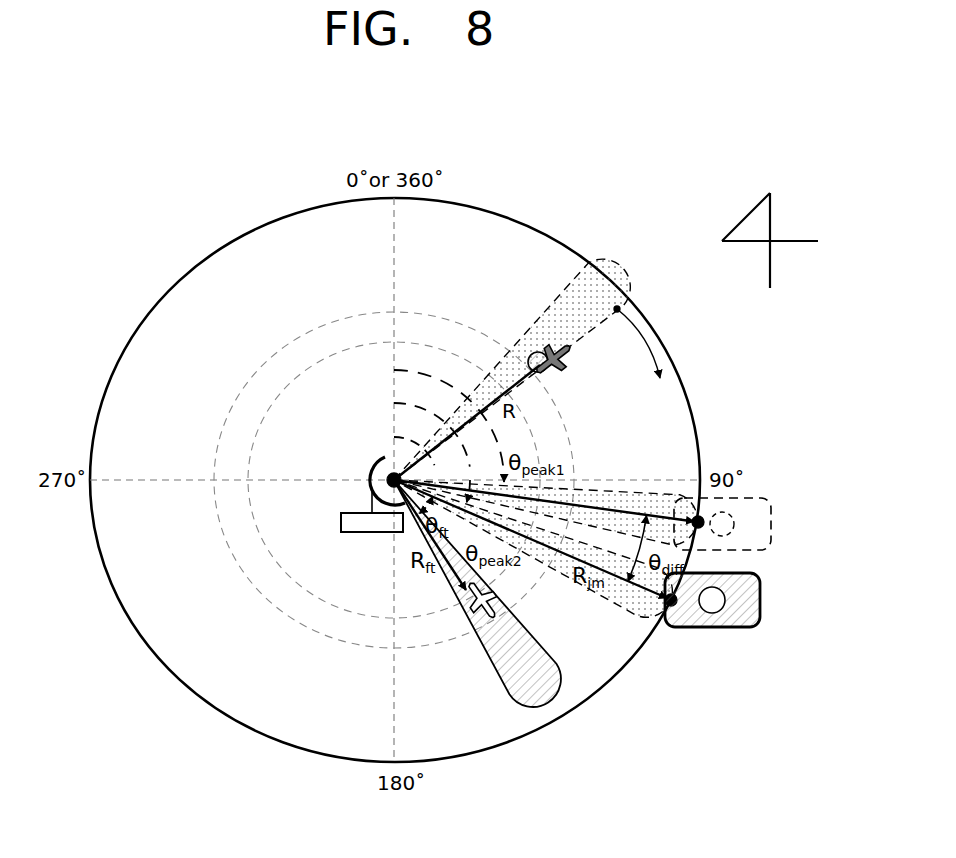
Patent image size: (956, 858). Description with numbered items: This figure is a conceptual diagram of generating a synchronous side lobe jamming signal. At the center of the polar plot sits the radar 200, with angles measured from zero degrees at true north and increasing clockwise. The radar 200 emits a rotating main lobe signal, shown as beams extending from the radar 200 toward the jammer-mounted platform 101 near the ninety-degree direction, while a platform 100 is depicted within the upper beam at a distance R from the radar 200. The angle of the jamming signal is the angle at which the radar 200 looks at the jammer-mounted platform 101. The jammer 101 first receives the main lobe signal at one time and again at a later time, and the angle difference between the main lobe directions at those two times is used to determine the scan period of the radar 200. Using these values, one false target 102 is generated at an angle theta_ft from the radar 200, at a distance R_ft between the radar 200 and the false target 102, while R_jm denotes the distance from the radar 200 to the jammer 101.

The target aircraft 100 is at (557, 343).
The jammer-mounted platform 101 is at (760, 600).
The false target 102 is at (477, 618).
The radar 200 is at (341, 521).